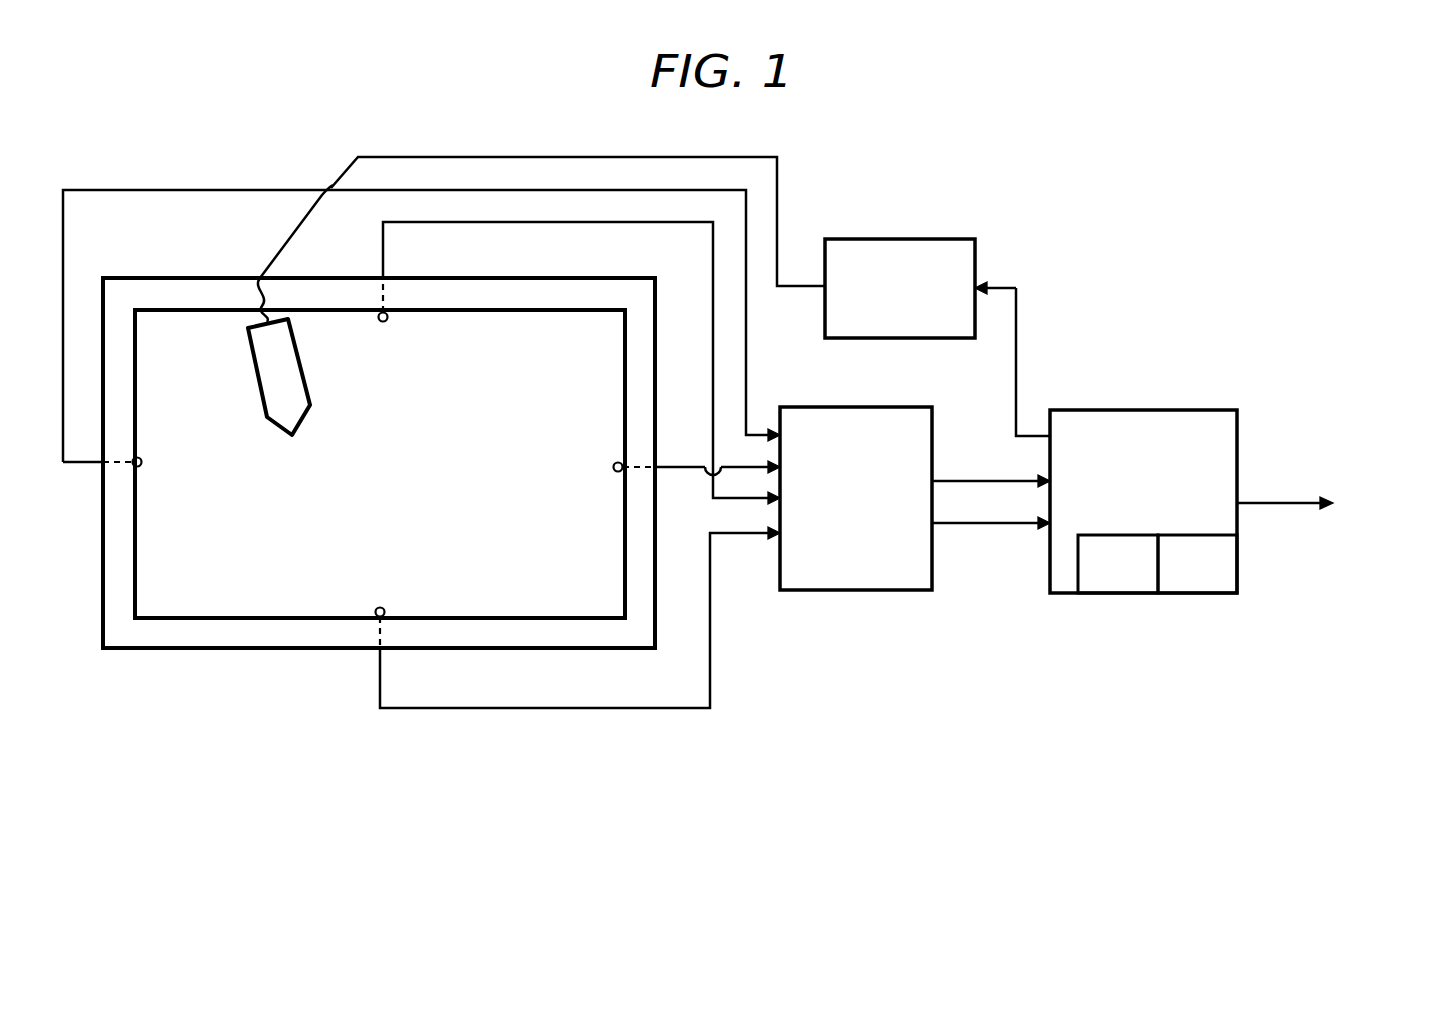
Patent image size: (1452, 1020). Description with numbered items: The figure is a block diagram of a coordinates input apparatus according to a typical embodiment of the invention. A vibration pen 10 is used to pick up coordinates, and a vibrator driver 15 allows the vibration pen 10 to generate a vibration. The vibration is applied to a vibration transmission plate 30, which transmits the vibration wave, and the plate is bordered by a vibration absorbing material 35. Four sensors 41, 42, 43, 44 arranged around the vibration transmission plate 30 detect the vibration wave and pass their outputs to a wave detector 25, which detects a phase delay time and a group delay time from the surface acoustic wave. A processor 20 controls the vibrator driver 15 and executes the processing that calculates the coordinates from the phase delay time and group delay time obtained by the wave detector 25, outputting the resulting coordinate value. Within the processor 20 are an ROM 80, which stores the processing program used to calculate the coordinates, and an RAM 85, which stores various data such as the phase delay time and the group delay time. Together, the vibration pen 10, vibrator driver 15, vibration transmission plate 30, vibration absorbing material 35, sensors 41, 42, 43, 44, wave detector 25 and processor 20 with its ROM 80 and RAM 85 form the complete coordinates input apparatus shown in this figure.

The vibration pen 10 is at (310, 395).
The vibrator driver 15 is at (962, 238).
The processor 20 is at (1210, 408).
The wave detector 25 is at (903, 407).
The vibration transmission plate 30 is at (180, 608).
The vibration absorbing material 35 is at (285, 640).
The sensor 41 is at (141, 466).
The sensor 42 is at (614, 470).
The sensor 43 is at (378, 320).
The sensor 44 is at (375, 608).
The ROM 80 is at (1110, 590).
The RAM 85 is at (1190, 590).